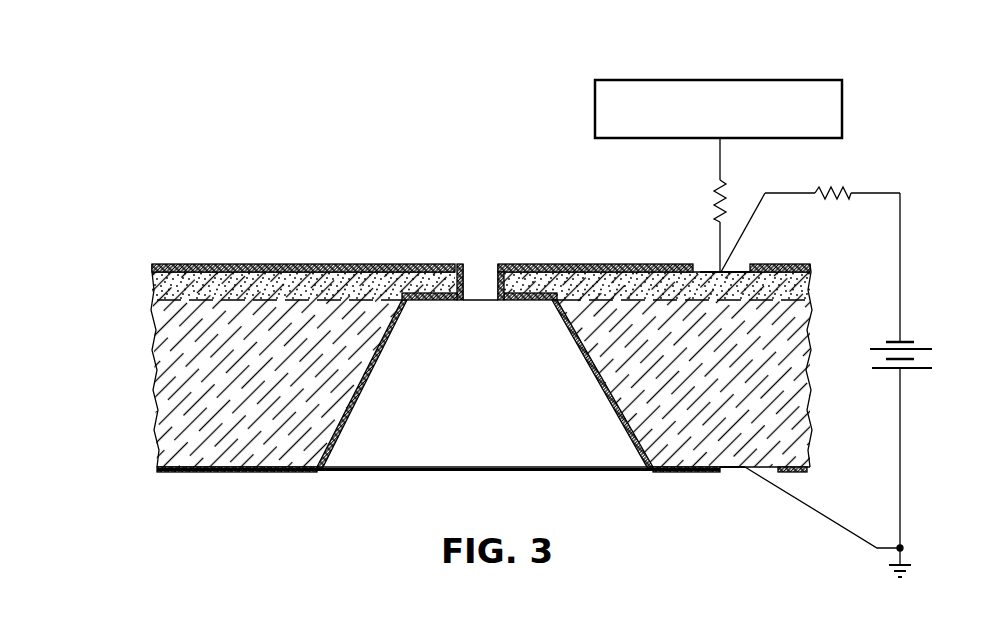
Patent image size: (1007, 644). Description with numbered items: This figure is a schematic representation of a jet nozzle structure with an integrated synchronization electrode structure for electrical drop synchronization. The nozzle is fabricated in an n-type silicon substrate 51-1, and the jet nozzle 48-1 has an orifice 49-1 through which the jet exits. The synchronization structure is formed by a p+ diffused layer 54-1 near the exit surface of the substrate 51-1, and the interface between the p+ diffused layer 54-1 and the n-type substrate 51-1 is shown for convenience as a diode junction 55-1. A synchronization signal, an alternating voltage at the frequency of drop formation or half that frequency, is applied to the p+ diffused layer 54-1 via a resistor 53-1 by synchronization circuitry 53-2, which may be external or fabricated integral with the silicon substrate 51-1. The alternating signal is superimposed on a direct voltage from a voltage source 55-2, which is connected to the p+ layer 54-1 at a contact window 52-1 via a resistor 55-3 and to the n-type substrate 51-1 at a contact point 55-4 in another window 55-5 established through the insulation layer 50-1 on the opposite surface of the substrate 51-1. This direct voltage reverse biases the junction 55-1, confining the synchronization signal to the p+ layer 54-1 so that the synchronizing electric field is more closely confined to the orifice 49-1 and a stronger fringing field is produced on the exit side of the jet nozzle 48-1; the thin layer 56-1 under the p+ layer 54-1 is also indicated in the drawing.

The jet nozzle 48-1 is at (503, 251).
The orifice 49-1 is at (480, 272).
The insulation layer 50-1 is at (323, 268).
The n-type silicon substrate 51-1 is at (175, 367).
The contact window 52-1 is at (703, 262).
The resistor 53-1 is at (713, 191).
The synchronization circuitry 53-2 is at (783, 82).
The p+ diffused layer 54-1 is at (153, 284).
The junction 55-1 is at (797, 297).
The voltage source 55-2 is at (887, 370).
The resistor 55-3 is at (843, 190).
The contact point 55-4 is at (744, 469).
The window 55-5 is at (732, 469).
The metal layer 56-1 is at (441, 304).